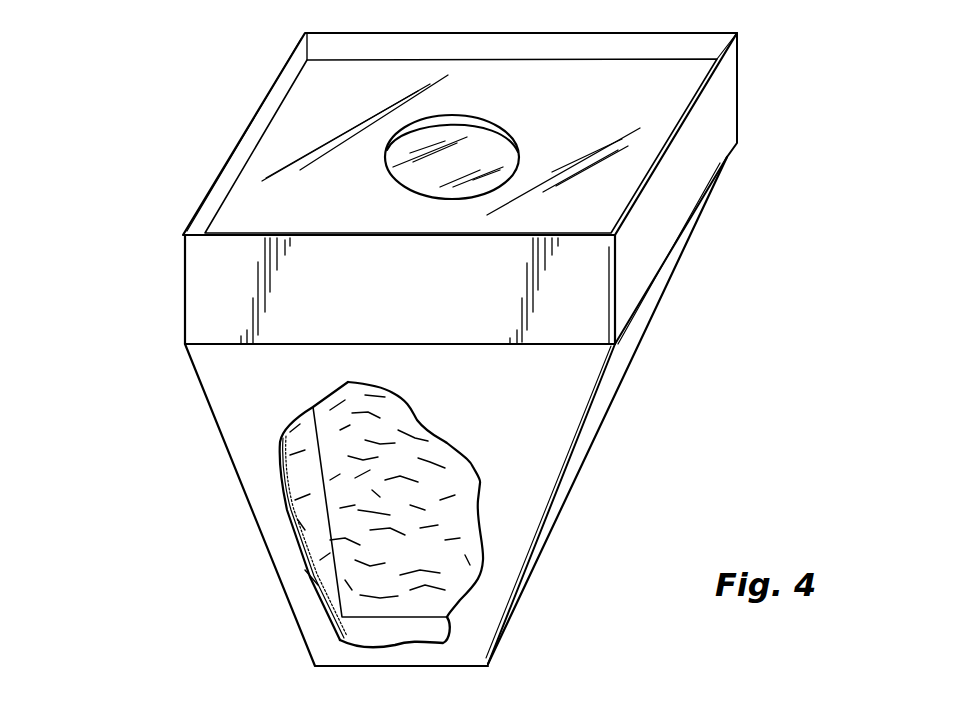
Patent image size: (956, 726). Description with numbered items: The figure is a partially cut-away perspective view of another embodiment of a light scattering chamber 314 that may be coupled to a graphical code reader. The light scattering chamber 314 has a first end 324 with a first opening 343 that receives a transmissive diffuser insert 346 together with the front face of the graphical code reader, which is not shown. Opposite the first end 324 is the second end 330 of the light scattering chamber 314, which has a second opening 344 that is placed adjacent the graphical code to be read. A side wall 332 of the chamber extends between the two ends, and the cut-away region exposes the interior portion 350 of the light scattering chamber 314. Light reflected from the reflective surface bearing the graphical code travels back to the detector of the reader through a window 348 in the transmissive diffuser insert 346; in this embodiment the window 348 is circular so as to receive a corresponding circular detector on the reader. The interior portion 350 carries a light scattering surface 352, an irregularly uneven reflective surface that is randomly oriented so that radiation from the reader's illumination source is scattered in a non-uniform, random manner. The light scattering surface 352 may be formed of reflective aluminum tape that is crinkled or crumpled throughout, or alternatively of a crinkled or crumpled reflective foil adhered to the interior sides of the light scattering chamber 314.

The light scattering chamber 314 is at (152, 397).
The first end 324 is at (580, 292).
The second end 330 is at (465, 637).
The side wall 332 is at (540, 455).
The first opening 343 is at (248, 148).
The second opening 344 is at (358, 637).
The transmissive diffuser insert 346 is at (662, 101).
The window 348 is at (520, 157).
The interior portion 350 is at (300, 545).
The light scattering surface 352 is at (290, 487).